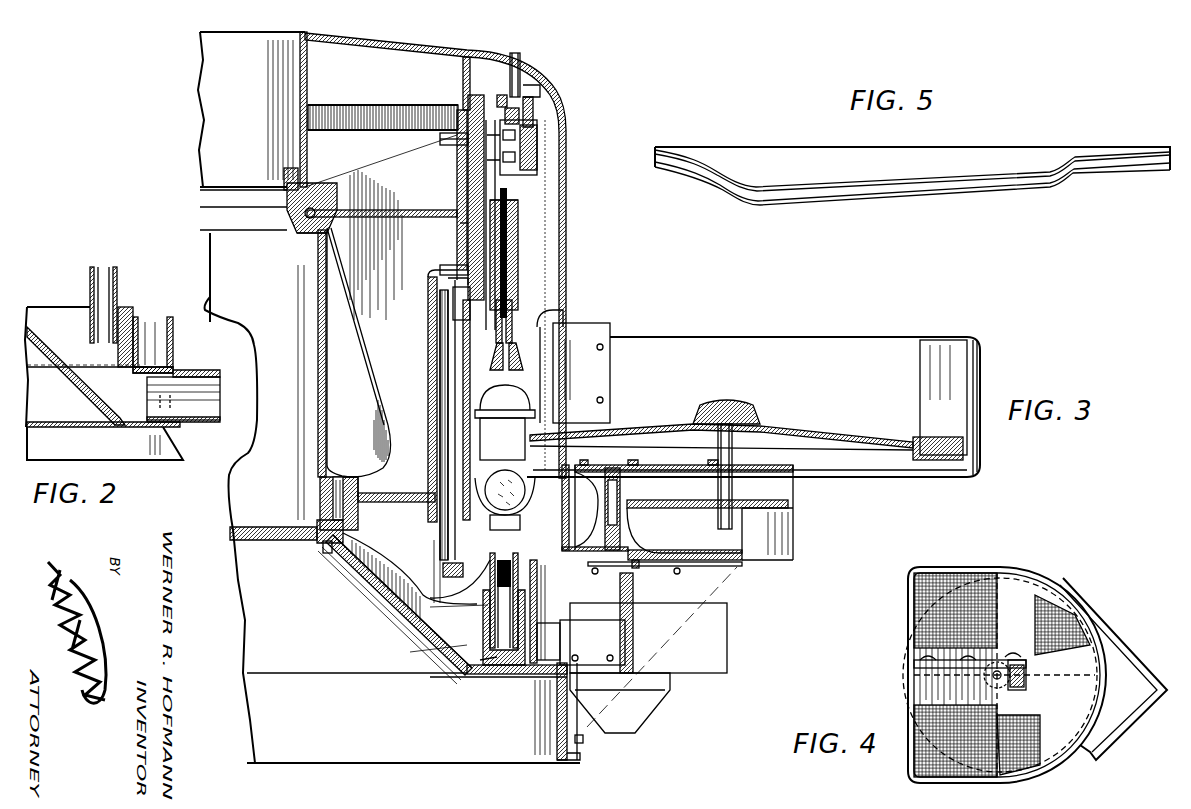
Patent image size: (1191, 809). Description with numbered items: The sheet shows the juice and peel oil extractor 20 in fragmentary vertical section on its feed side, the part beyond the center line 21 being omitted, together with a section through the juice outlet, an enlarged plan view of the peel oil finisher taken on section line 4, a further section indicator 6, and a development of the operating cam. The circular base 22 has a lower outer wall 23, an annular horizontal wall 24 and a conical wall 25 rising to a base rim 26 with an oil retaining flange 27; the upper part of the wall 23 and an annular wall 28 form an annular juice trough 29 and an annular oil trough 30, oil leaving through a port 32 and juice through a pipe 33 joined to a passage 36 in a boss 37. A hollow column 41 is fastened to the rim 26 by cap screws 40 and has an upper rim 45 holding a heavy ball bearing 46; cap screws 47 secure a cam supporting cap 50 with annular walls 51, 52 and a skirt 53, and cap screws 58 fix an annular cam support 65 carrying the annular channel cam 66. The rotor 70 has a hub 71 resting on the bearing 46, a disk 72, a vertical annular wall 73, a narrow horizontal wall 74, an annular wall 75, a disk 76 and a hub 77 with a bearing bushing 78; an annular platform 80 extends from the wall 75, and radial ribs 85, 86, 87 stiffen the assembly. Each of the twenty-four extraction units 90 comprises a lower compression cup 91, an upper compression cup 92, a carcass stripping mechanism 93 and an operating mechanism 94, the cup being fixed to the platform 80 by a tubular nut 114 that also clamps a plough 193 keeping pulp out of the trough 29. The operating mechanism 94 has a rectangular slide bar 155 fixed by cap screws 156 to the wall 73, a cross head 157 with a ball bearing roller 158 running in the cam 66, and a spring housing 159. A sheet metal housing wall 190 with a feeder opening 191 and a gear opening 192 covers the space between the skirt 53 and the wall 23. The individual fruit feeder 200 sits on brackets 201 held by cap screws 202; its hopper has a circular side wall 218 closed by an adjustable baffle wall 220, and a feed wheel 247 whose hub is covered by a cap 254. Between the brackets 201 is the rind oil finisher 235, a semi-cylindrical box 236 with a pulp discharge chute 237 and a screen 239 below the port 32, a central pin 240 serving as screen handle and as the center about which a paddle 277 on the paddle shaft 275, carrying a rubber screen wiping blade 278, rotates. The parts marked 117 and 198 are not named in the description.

In FIG. 3, the section line 4— 4 is at (554, 612).
In FIG. 3, the section line 6- 6 is at (446, 535).
In FIG. 5, the juice and peel oil extractor 20 is at (686, 90).
In FIG. 3, the center line 21 is at (214, 294).
In FIG. 3, the circular base 22 is at (554, 726).
In FIG. 3, the lower outer wall 23 is at (560, 697).
In FIG. 2, the lower outer wall 23 is at (173, 350).
In FIG. 3, the annular horizontal wall 24 is at (507, 670).
In FIG. 2, the annular horizontal wall 24 is at (45, 368).
In FIG. 3, the conical wall 25 is at (400, 600).
In FIG. 3, the base rim 26 is at (320, 533).
In FIG. 3, the annular oil retaining flange 27 is at (343, 533).
In FIG. 3, the annular wall 28 is at (523, 617).
In FIG. 2, the annular wall 28 is at (125, 357).
In FIG. 3, the annular juice trough 29 is at (413, 648).
In FIG. 2, the annular juice trough 29 is at (72, 337).
In FIG. 3, the annular oil trough 30 is at (562, 615).
In FIG. 2, the annular oil trough 30 is at (143, 323).
In FIG. 3, the port 32 is at (567, 643).
In FIG. 2, the pipe 33 is at (202, 408).
In FIG. 2, the passage 36 is at (130, 425).
In FIG. 2, the boss 37 is at (100, 407).
In FIG. 3, the cap screws 40 is at (326, 555).
In FIG. 3, the hollow column 41 is at (318, 405).
In FIG. 3, the rim 45 is at (290, 210).
In FIG. 3, the ball bearing 46 is at (300, 229).
In FIG. 3, the cap screws 47 is at (288, 170).
In FIG. 3, the cam supporting cap 50 is at (298, 82).
In FIG. 3, the annular wall 51 is at (462, 73).
In FIG. 3, the annular wall 52 is at (505, 100).
In FIG. 3, the skirt 53 is at (540, 95).
In FIG. 3, the cap screws 58 is at (517, 92).
In FIG. 3, the annular cam support 65 is at (542, 105).
In FIG. 5, the annular cam support 65 is at (995, 158).
In FIG. 3, the annular channel cam 66 is at (545, 150).
In FIG. 5, the annular channel cam 66 is at (1013, 182).
In FIG. 3, the rotor 70 is at (452, 174).
In FIG. 3, the hub 71 is at (306, 187).
In FIG. 3, the disk 72 is at (380, 213).
In FIG. 3, the vertical annular wall 73 is at (462, 228).
In FIG. 3, the narrow horizontal wall 74 is at (450, 278).
In FIG. 3, the annular wall 75 is at (428, 365).
In FIG. 3, the disk 76 is at (385, 493).
In FIG. 3, the hub 77 is at (350, 478).
In FIG. 3, the bearing bushing 78 is at (340, 477).
In FIG. 3, the annular platform 80 is at (480, 552).
In FIG. 3, the radial rib 85 is at (400, 167).
In FIG. 3, the radial rib 86 is at (372, 338).
In FIG. 3, the radial rib 87 is at (397, 557).
In FIG. 3, the extraction unit 90 is at (542, 281).
In FIG. 3, the lower compression cup 91 is at (533, 482).
In FIG. 3, the upper compression cup 92 is at (542, 397).
In FIG. 3, the carcass ejecting or stripping mechanism 93 is at (436, 402).
In FIG. 3, the operating mechanism 94 is at (529, 256).
In FIG. 3, the tubular nut 114 is at (490, 597).
In FIG. 2, the tubular nut 114 is at (117, 283).
In FIG. 3, the collar 117 is at (453, 297).
In FIG. 3, the rectangular slide bar 155 is at (470, 197).
In FIG. 3, the cap screws 156 is at (442, 140).
In FIG. 3, the cross head 157 is at (504, 190).
In FIG. 3, the ball bearing roller 158 is at (512, 127).
In FIG. 3, the spring housing 159 is at (523, 238).
In FIG. 3, the sheet metal housing wall 190 is at (563, 202).
In FIG. 3, the feeder opening 191 is at (530, 340).
In FIG. 3, the opening 192 is at (520, 548).
In FIG. 3, the plough 193 is at (497, 657).
In FIG. 3, the motor winding 198 is at (383, 108).
In FIG. 3, the individual fruit feeder 200 is at (799, 347).
In FIG. 3, the brackets 201 is at (725, 578).
In FIG. 3, the cap screws 202 is at (583, 740).
In FIG. 3, the circular side wall 218 is at (980, 375).
In FIG. 3, the baffle wall 220 is at (603, 378).
In FIG. 4, the rind oil finisher 235 is at (1071, 573).
In FIG. 4, the semi-cylindrical box 236 is at (975, 568).
In FIG. 4, the pulp discharge chute 237 is at (1140, 710).
In FIG. 4, the screen 239 is at (1077, 706).
In FIG. 3, the pin 240 is at (617, 665).
In FIG. 4, the pin 240 is at (998, 682).
In FIG. 3, the feed wheel 247 is at (808, 413).
In FIG. 3, the cap 254 is at (705, 407).
In FIG. 3, the paddle shaft 275 is at (632, 628).
In FIG. 4, the paddle shaft 275 is at (1026, 677).
In FIG. 4, the paddle 277 is at (1003, 668).
In FIG. 4, the rubber screen wiping blade 278 is at (950, 659).